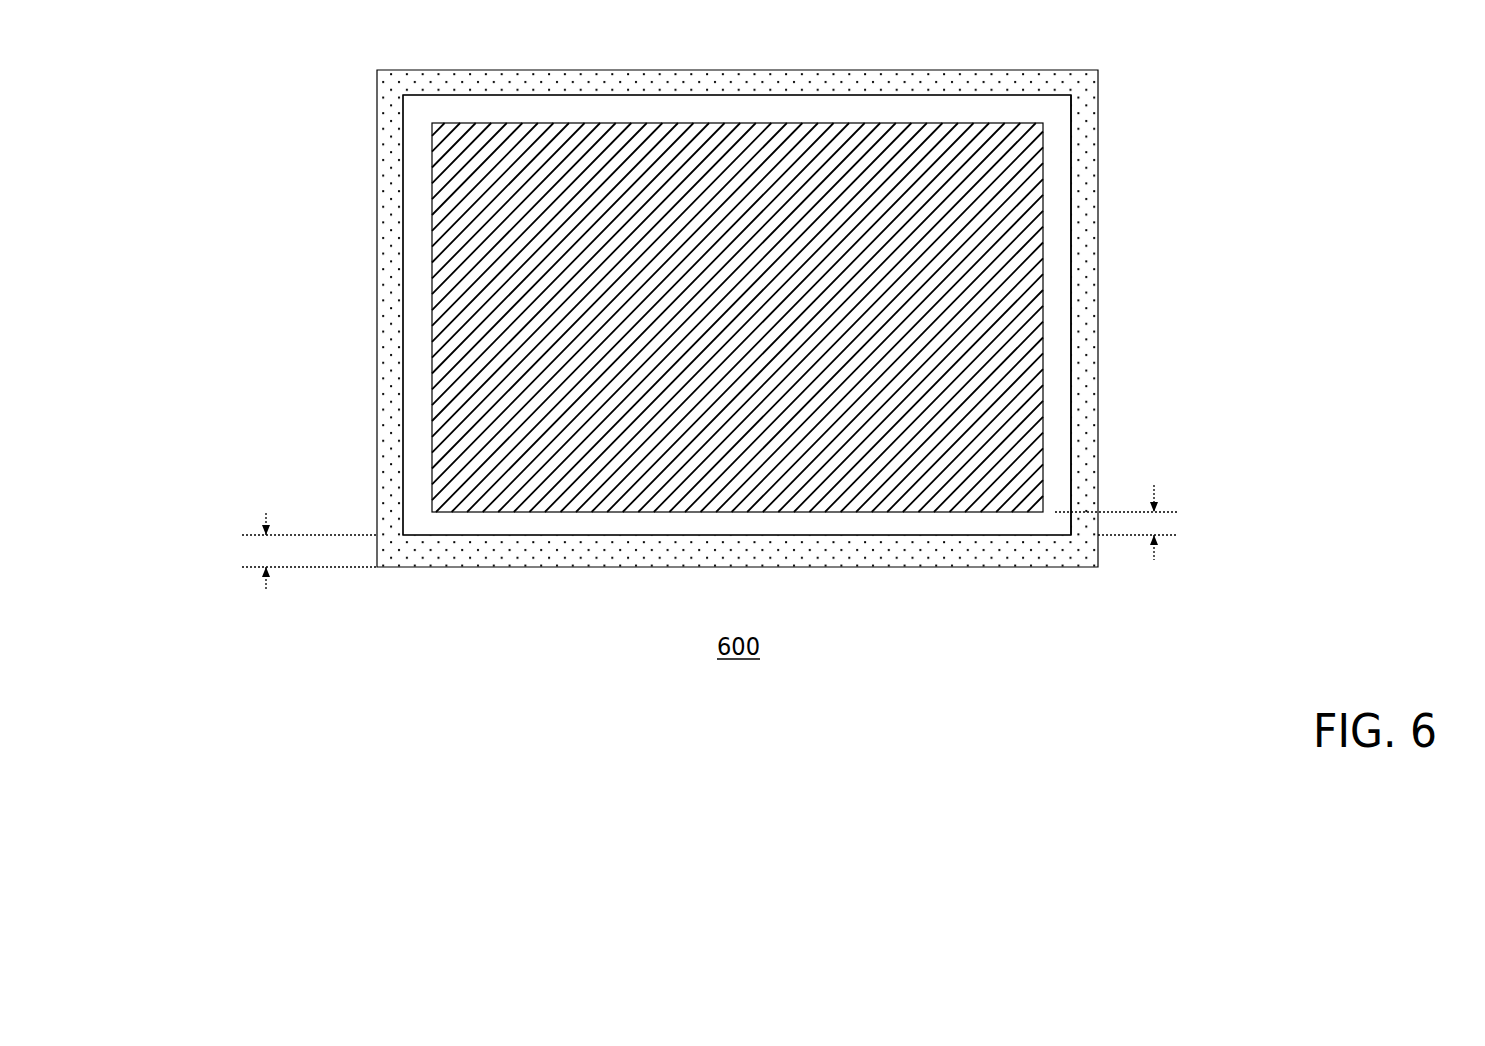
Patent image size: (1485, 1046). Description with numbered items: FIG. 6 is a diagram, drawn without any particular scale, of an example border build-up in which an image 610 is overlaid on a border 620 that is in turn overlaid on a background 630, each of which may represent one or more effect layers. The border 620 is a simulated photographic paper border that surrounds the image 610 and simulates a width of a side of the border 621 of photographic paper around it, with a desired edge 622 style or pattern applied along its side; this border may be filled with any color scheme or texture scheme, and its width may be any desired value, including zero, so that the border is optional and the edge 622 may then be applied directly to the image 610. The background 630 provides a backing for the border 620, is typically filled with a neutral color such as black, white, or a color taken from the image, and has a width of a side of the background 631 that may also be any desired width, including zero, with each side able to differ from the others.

The image 610 is at (1008, 343).
The border 620 is at (1057, 262).
The width of a side of the border 621 is at (1154, 522).
The edge 622 is at (1071, 218).
The background 630 is at (1085, 178).
The width of a side of the background 631 is at (266, 550).